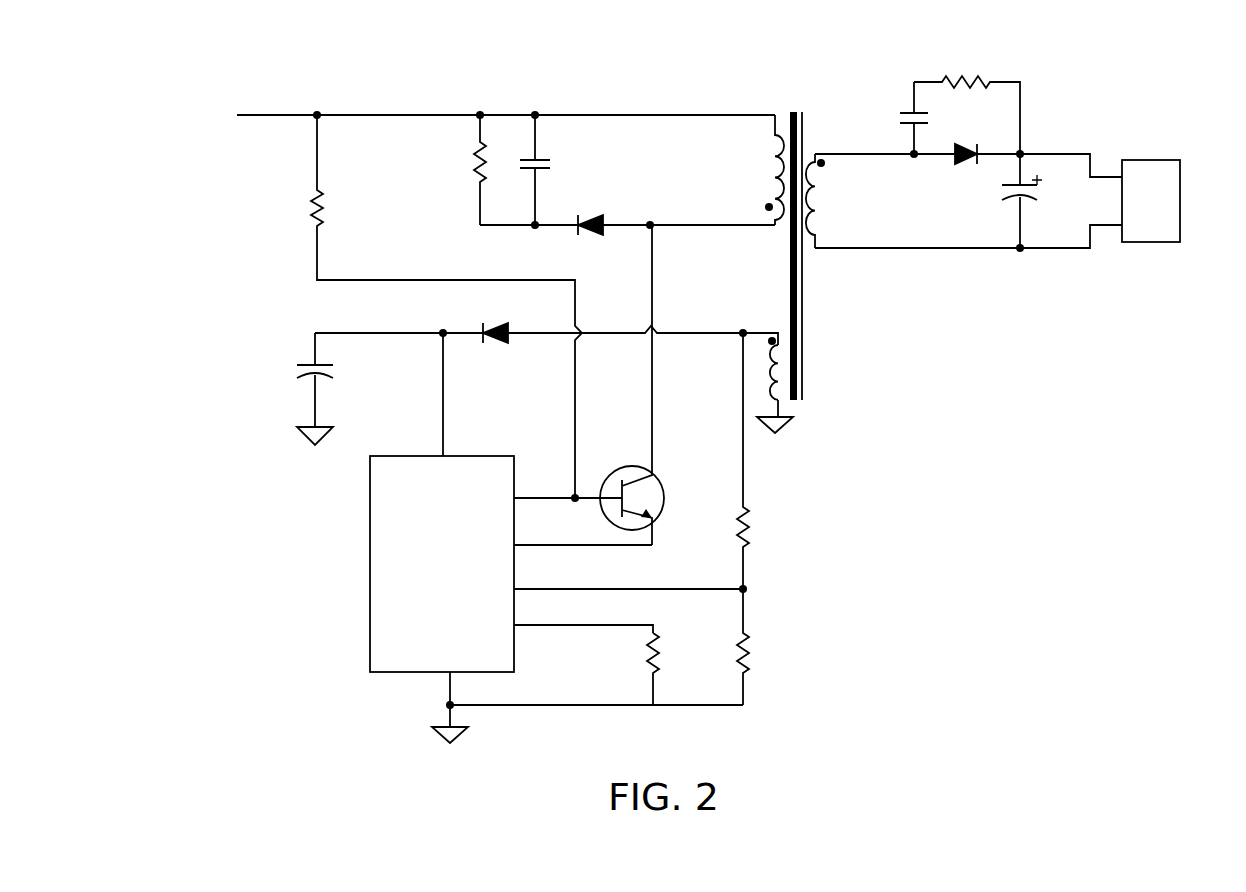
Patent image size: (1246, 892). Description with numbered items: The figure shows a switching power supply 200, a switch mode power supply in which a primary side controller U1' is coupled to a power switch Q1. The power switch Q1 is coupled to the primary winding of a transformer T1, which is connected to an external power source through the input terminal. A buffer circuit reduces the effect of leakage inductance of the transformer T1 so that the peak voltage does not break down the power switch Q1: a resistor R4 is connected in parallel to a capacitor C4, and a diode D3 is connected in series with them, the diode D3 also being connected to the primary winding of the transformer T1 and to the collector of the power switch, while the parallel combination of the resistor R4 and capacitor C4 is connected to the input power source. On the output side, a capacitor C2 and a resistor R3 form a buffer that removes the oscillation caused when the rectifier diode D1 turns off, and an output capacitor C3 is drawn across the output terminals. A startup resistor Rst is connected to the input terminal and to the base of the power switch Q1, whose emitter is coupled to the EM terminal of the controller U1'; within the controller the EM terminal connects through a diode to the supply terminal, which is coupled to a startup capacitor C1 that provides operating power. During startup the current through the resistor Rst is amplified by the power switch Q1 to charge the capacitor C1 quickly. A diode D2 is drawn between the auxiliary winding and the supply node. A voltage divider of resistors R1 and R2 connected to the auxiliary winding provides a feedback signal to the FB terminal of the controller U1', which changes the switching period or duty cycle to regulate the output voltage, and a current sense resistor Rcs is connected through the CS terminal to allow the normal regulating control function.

The switching power supply 200 is at (1084, 90).
The startup resistor Rst is at (416, 306).
The resistor R4 is at (454, 170).
The capacitor C4 is at (554, 170).
The diode D3 is at (588, 243).
The transformer T1 is at (795, 241).
The capacitor C2 is at (890, 120).
The resistor R3 is at (967, 115).
The rectifier diode D1 is at (968, 168).
The output filter capacitor C3 is at (997, 203).
The startup capacitor C1 is at (333, 389).
The auxiliary winding diode D2 is at (491, 349).
The primary side controller U1' is at (558, 502).
The power switch Q1 is at (653, 385).
The voltage divider resistor R1 is at (765, 461).
The voltage divider resistor R2 is at (765, 647).
The current sense resistor Rcs is at (619, 669).